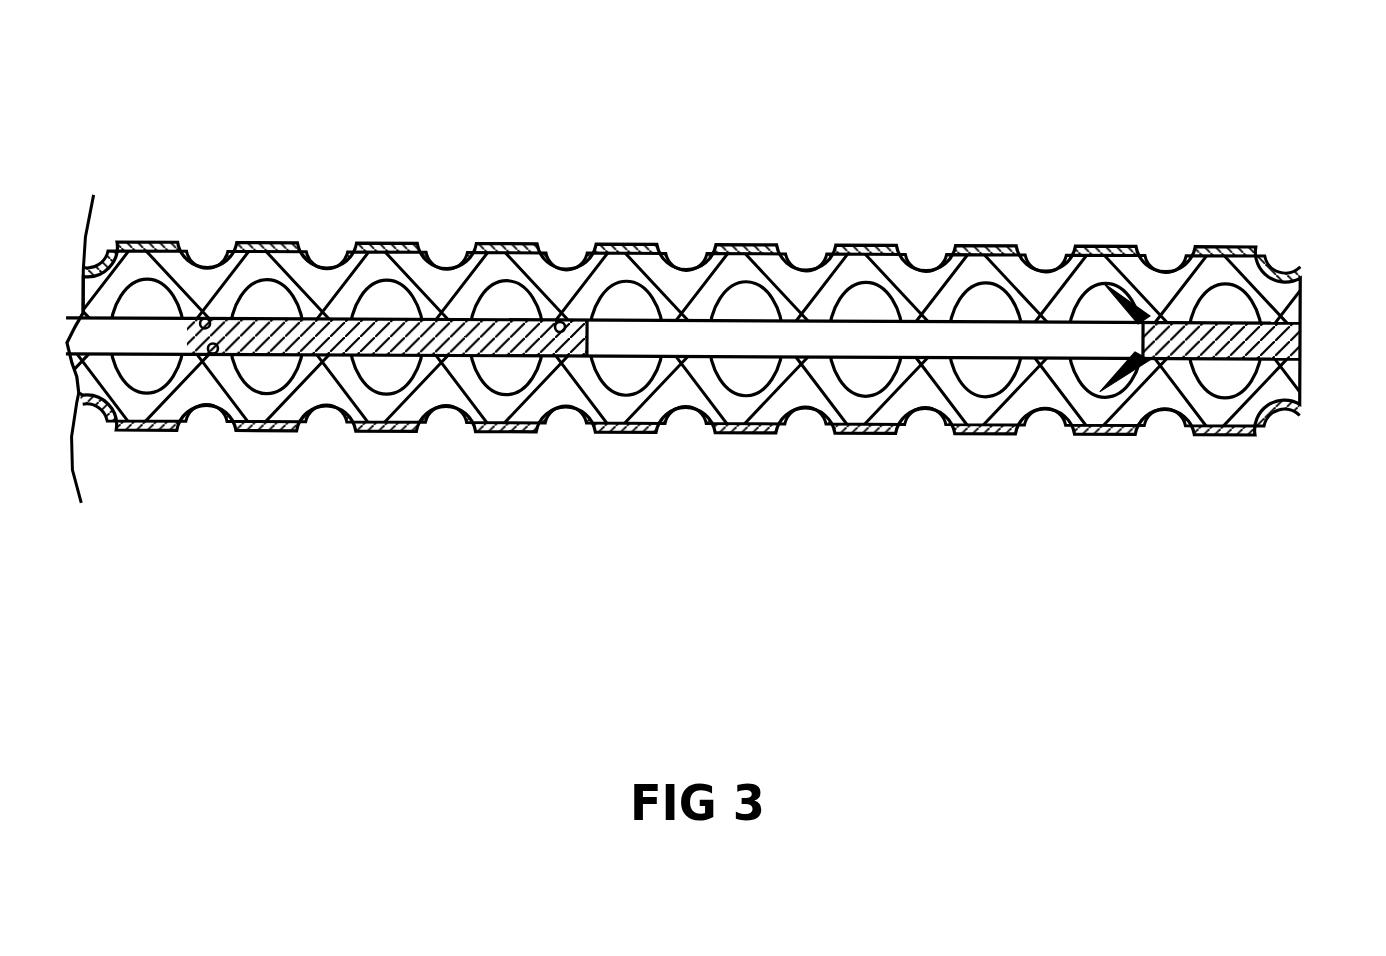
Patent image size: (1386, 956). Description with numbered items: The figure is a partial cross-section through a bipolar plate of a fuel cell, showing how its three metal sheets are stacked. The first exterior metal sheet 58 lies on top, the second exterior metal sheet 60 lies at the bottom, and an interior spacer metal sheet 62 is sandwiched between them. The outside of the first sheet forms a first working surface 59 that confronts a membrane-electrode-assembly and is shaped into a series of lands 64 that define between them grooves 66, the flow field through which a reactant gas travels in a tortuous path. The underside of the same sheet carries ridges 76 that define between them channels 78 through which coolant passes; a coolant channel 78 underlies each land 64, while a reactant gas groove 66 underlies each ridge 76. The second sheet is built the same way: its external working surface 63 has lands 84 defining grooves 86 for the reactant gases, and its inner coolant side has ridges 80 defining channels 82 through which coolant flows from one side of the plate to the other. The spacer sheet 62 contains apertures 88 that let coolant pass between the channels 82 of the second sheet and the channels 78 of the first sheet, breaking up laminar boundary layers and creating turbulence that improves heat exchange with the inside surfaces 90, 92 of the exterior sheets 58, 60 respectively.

The first exterior metal sheet 58 is at (1000, 298).
The first working surface 59 is at (1097, 200).
The second exterior metal sheet 60 is at (987, 393).
The interior spacer metal sheet 62 is at (1300, 341).
The working surface 63 is at (1094, 482).
The lands 64 is at (515, 244).
The grooves 66 is at (922, 252).
The ridges 76 is at (563, 322).
The channels 78 is at (386, 300).
The ridges 80 is at (214, 354).
The channels 82 is at (384, 372).
The lands 84 is at (752, 436).
The grooves 86 is at (930, 426).
The apertures 88 is at (696, 337).
The inside surface 90 is at (1158, 328).
The inside surface 92 is at (1150, 358).